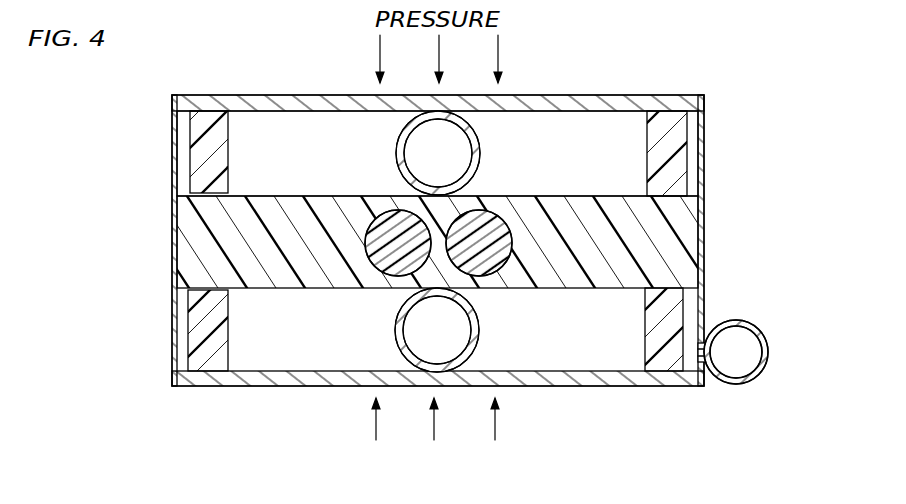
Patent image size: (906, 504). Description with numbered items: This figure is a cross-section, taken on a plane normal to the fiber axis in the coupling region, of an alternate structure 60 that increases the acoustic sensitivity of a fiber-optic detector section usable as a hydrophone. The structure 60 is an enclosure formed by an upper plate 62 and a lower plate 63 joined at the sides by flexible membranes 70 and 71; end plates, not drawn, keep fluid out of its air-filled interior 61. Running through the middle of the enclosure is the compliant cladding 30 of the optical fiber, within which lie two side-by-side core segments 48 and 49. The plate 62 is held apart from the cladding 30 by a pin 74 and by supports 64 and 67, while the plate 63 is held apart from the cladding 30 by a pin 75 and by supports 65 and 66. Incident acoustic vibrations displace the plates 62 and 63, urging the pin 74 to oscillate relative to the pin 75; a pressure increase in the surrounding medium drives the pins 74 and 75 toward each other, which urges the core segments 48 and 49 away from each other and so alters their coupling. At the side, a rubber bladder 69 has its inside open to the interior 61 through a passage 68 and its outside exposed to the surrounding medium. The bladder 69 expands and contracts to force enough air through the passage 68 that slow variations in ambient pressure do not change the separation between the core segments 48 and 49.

The compliant cladding 30 is at (349, 203).
The fiber core 48 is at (496, 276).
The core segment 49 is at (381, 273).
The structure 60 is at (225, 390).
The interior 61 is at (583, 135).
The plate 62 is at (545, 95).
The plate 63 is at (581, 380).
The support 64 is at (647, 157).
The support 65 is at (645, 330).
The support 66 is at (228, 331).
The support 67 is at (230, 150).
The passage 68 is at (705, 378).
The rubber bladder 69 is at (758, 327).
The flexible membrane 70 is at (172, 152).
The flexible membrane 71 is at (705, 162).
The pin 74 is at (400, 147).
The pin 75 is at (472, 350).